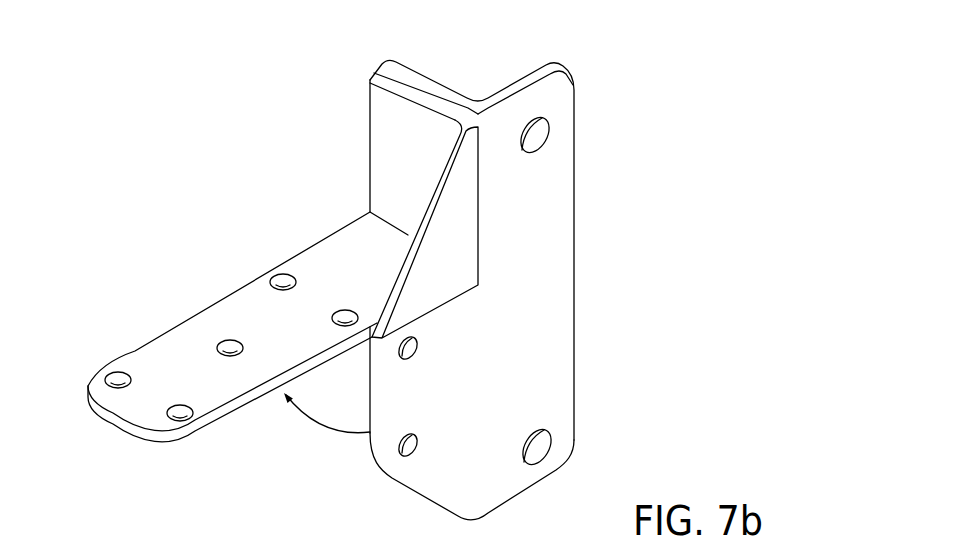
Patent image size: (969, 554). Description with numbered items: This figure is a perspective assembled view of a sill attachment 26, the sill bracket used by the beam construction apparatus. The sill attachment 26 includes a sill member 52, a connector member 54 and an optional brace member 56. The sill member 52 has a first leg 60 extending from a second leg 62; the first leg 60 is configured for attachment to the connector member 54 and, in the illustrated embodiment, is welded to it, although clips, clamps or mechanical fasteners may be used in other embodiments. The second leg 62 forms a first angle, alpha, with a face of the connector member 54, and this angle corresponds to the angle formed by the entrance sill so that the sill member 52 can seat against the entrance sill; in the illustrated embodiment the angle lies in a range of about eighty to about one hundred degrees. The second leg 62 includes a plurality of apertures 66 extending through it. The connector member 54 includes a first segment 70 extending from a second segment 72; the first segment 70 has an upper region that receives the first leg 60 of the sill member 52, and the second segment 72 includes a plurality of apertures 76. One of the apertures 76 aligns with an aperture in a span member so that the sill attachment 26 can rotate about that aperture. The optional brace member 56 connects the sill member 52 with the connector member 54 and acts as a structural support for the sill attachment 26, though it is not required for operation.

The sill attachment 26 is at (387, 260).
The sill member 52 is at (248, 406).
The connector member 54 is at (576, 268).
The brace member 56 is at (480, 207).
The first leg 60 is at (370, 145).
The second leg 62 is at (180, 405).
The apertures 66 is at (346, 312).
The first segment 70 is at (437, 78).
The second segment 72 is at (512, 83).
The apertures 76 is at (541, 138).